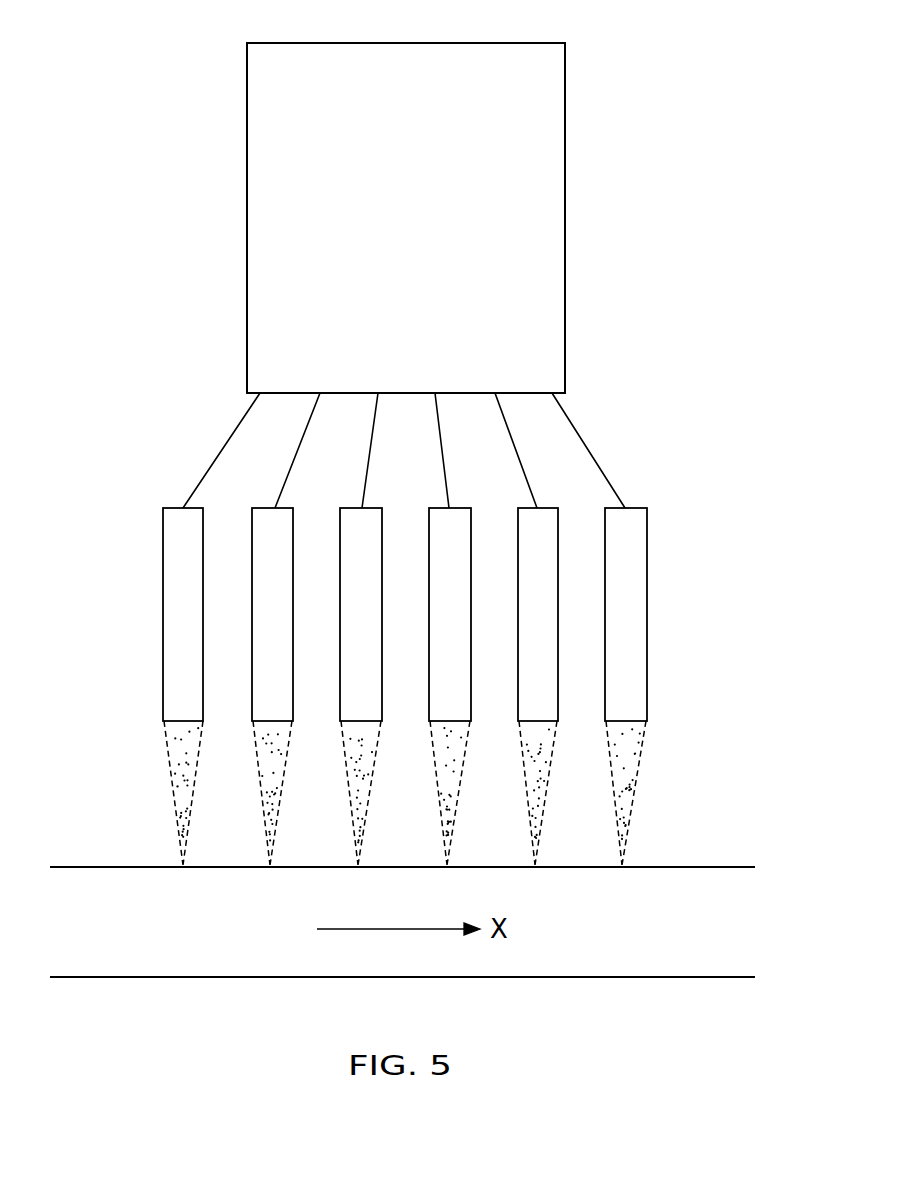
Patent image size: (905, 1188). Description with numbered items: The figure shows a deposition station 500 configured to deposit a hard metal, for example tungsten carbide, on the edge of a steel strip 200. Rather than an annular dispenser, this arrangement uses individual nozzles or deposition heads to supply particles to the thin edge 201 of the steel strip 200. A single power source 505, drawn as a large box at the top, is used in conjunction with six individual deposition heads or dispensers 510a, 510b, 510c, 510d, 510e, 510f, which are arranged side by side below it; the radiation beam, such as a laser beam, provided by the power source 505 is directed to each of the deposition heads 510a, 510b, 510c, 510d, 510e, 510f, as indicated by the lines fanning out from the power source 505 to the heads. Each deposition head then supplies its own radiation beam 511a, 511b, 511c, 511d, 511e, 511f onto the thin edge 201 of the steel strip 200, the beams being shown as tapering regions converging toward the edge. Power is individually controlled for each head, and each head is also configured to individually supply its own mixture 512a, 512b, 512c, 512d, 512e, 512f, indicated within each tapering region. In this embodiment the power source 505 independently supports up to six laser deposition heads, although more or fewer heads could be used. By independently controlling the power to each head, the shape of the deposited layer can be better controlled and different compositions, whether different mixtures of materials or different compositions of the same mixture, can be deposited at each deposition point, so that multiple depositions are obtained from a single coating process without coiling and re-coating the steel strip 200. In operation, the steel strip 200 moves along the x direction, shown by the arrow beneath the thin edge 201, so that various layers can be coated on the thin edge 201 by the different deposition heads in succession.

The deposition station 500 is at (108, 128).
The power source 505 is at (570, 143).
The deposition head 510a is at (177, 545).
The deposition head 510b is at (263, 518).
The deposition head 510c is at (353, 516).
The deposition head 510d is at (457, 518).
The deposition head 510e is at (545, 520).
The deposition head 510f is at (630, 545).
The radiation beam 511a is at (170, 775).
The radiation beam 511b is at (258, 760).
The radiation beam 511c is at (378, 750).
The radiation beam 511d is at (437, 825).
The radiation beam 511e is at (548, 770).
The radiation beam 511f is at (640, 750).
The mixture 512a is at (175, 797).
The mixture 512b is at (270, 825).
The mixture 512c is at (355, 830).
The mixture 512d is at (450, 835).
The mixture 512e is at (535, 833).
The mixture 512f is at (625, 767).
The thin edge 201 is at (728, 866).
The steel strip 200 is at (665, 958).